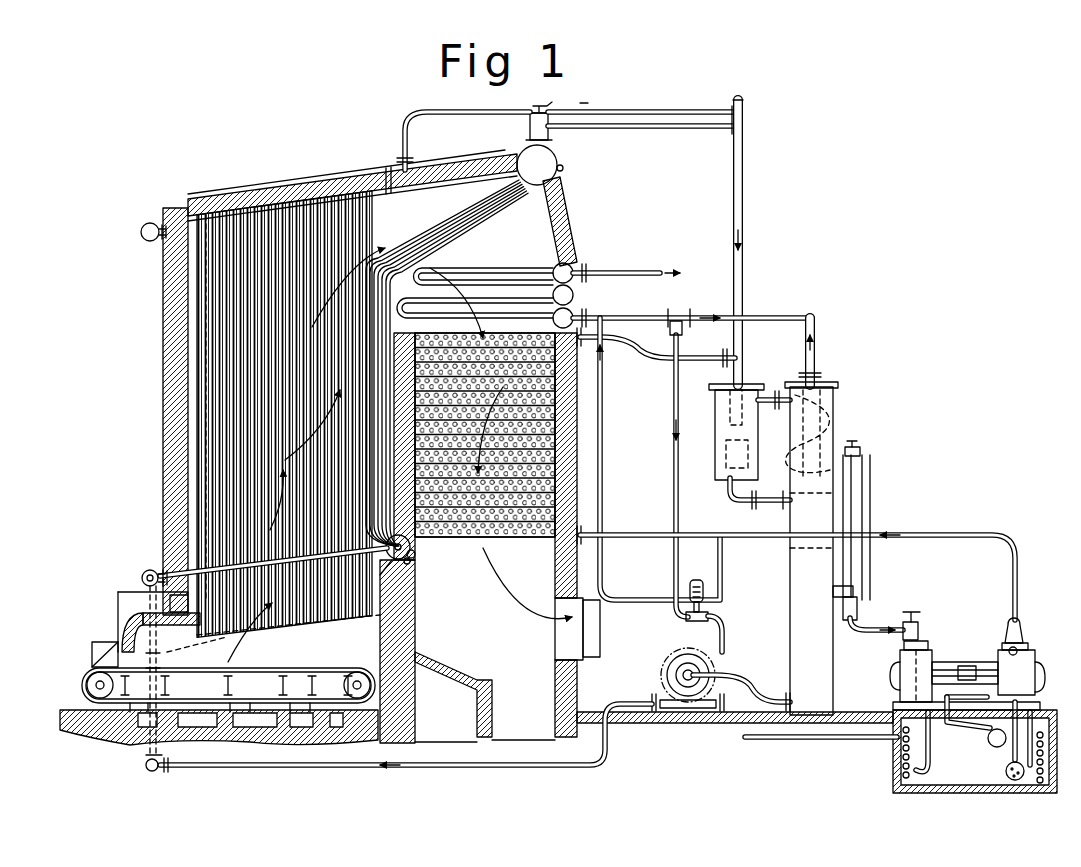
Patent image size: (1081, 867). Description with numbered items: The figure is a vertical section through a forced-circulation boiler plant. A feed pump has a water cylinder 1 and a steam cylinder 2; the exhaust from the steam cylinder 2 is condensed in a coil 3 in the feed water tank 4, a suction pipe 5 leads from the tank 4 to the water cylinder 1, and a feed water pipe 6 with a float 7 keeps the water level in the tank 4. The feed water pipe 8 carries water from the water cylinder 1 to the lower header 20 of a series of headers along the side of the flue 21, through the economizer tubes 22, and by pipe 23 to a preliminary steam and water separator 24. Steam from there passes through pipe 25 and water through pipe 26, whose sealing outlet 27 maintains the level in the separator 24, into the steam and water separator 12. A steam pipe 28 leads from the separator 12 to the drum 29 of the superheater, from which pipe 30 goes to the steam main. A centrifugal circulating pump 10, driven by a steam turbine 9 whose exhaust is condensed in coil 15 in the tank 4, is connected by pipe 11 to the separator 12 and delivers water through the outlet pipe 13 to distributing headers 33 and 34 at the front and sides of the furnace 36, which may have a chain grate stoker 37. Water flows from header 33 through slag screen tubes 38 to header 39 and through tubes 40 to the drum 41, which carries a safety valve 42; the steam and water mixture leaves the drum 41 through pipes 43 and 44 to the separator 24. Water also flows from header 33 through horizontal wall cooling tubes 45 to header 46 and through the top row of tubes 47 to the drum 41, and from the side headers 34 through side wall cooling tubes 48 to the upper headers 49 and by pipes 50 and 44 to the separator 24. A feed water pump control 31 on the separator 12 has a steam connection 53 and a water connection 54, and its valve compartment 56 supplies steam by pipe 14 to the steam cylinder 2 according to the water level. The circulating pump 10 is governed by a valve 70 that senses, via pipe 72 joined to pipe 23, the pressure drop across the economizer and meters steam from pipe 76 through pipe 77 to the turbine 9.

The water cylinder 1 is at (1022, 674).
The steam cylinder 2 is at (897, 681).
The coil 3 is at (1050, 751).
The feed water tank 4 is at (980, 791).
The suction pipe 5 is at (1010, 761).
The feed water pipe 6 is at (967, 695).
The float 7 is at (975, 741).
The feed water pipe 8 is at (1020, 546).
The steam turbine 9 is at (683, 651).
The centrifugal circulating pump 10 is at (683, 676).
The pipe 11 is at (733, 689).
The steam and water separator 12 is at (835, 413).
The outlet pipe 13 is at (583, 763).
The pipe 14 is at (872, 628).
The coil 15 is at (903, 773).
The lower header 20 is at (452, 540).
The flue 21 is at (476, 476).
The tubes 22 is at (487, 540).
The pipe 23 is at (638, 363).
The preliminary steam and water separator 24 is at (722, 419).
The pipe 25 is at (777, 395).
The pipe 26 is at (772, 504).
The sealing outlet 27 is at (726, 466).
The steam pipe 28 is at (818, 334).
The drum 29 is at (576, 310).
The pipe 30 is at (603, 273).
The feed water pump control 31 is at (852, 494).
The distributing header 33 is at (142, 578).
The distributing headers 34 is at (287, 632).
The furnace 36 is at (255, 651).
The chain grate stoker 37 is at (246, 668).
The slag screen tubes 38 is at (208, 578).
The header 39 is at (410, 564).
The tubes 40 is at (470, 238).
The drum 41 is at (557, 178).
The safety valve 42 is at (529, 124).
The pipe 43 is at (640, 129).
The pipe 44 is at (744, 188).
The horizontal wall cooling tubes 45 is at (205, 413).
The header 46 is at (145, 242).
The tubes 47 is at (390, 196).
The side wall cooling tubes 48 is at (236, 440).
The upper headers 49 is at (347, 178).
The pipes 50 is at (482, 98).
The steam connection 53 is at (851, 451).
The water connection 54 is at (835, 591).
The valve compartment 56 is at (843, 613).
The valve 70 is at (705, 590).
The pipe 72 is at (604, 448).
The pipe 76 is at (673, 484).
The pipe 77 is at (722, 636).